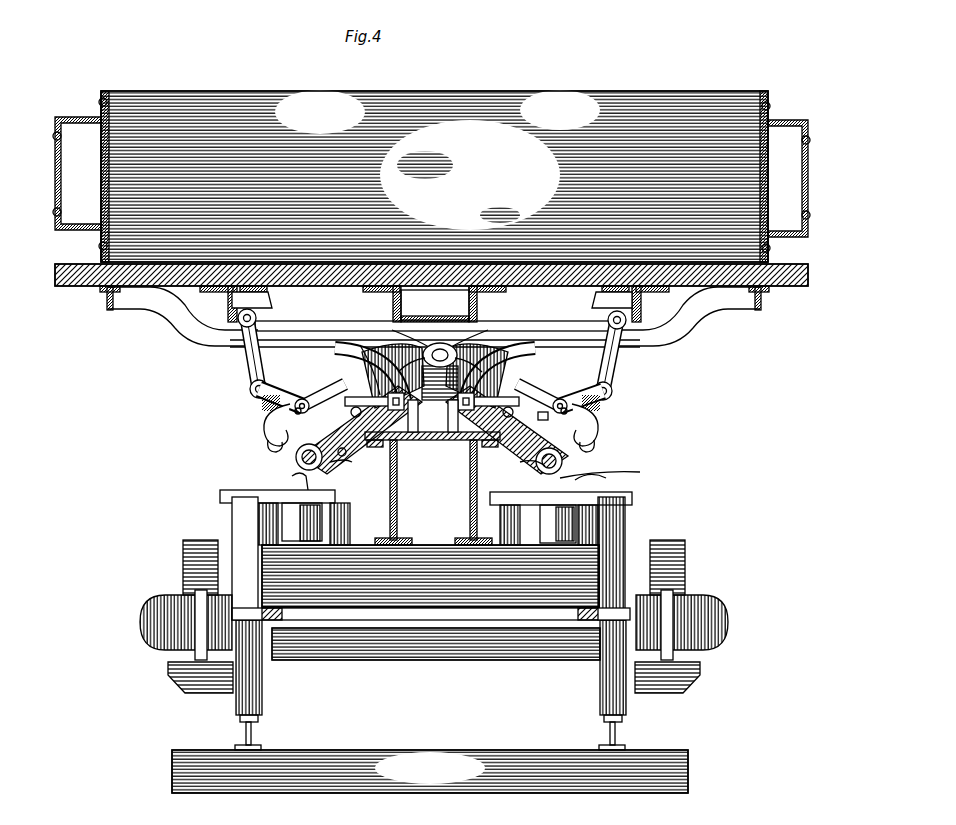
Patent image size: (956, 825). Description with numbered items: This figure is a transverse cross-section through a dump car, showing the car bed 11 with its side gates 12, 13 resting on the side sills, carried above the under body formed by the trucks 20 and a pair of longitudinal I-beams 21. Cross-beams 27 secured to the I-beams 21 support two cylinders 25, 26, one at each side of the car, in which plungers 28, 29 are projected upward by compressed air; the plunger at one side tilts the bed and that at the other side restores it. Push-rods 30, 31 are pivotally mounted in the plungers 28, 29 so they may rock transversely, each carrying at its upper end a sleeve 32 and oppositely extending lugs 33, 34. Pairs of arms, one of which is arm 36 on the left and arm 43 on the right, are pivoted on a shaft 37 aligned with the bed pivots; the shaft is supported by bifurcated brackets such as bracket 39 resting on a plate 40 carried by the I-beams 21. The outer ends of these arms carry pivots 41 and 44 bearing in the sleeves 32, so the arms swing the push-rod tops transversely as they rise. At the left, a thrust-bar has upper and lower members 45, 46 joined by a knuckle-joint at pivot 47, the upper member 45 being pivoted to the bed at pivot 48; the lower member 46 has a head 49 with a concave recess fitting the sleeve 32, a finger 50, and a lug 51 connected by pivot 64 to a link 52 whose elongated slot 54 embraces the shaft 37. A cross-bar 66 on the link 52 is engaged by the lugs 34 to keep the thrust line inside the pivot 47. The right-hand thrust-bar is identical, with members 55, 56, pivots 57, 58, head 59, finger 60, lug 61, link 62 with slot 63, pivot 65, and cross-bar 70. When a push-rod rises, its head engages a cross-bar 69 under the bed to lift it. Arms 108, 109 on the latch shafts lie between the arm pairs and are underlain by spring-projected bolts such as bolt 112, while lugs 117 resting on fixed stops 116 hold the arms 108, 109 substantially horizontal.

The car bed 11 is at (527, 102).
The side gate 12 is at (72, 117).
The side gate 13 is at (770, 143).
The trucks 20 is at (178, 680).
The I-beams 21 is at (397, 512).
The cylinder 25 is at (232, 525).
The cylinder 26 is at (628, 530).
The cross-beams 27 is at (415, 560).
The plunger 28 is at (262, 490).
The plunger 29 is at (616, 492).
The push-rod 30 is at (304, 524).
The push-rod 31 is at (584, 492).
The sleeve 32 is at (432, 452).
The lug 33 is at (292, 478).
The lug 34 is at (334, 466).
The arm 36 is at (352, 448).
The shaft 37 is at (439, 342).
The bifurcated bracket 39 is at (418, 444).
The plate 40 is at (441, 444).
The pivot 41 is at (320, 440).
The arm 43 is at (518, 442).
The pivot 44 is at (642, 472).
The upper member of thrust-bar 45 is at (251, 372).
The lower member of thrust-bar 46 is at (268, 410).
The pivot 47 is at (249, 392).
The pivot 48 is at (262, 312).
The head 49 is at (264, 430).
The finger 50 is at (268, 448).
The lug 51 is at (298, 404).
The link 52 is at (325, 390).
The elongated slot 54 is at (415, 356).
The upper member of thrust-bar 55 is at (612, 368).
The lower member of thrust-bar 56 is at (596, 408).
The pivot 57 is at (613, 392).
The pivot 58 is at (603, 312).
The head 59 is at (598, 430).
The finger 60 is at (592, 455).
The lug 61 is at (565, 404).
The link 62 is at (536, 392).
The elongated slot 63 is at (462, 356).
The pivot 64 is at (303, 399).
The pivot 65 is at (558, 399).
The cross-bar 66 is at (344, 452).
The cross-bar 69 is at (433, 318).
The cross-bar 70 is at (546, 420).
The arm 108 is at (375, 345).
The arm 109 is at (528, 349).
The spring-projected bolt 112 is at (348, 352).
The fixed stop 116 is at (426, 442).
The lug 117 is at (450, 442).